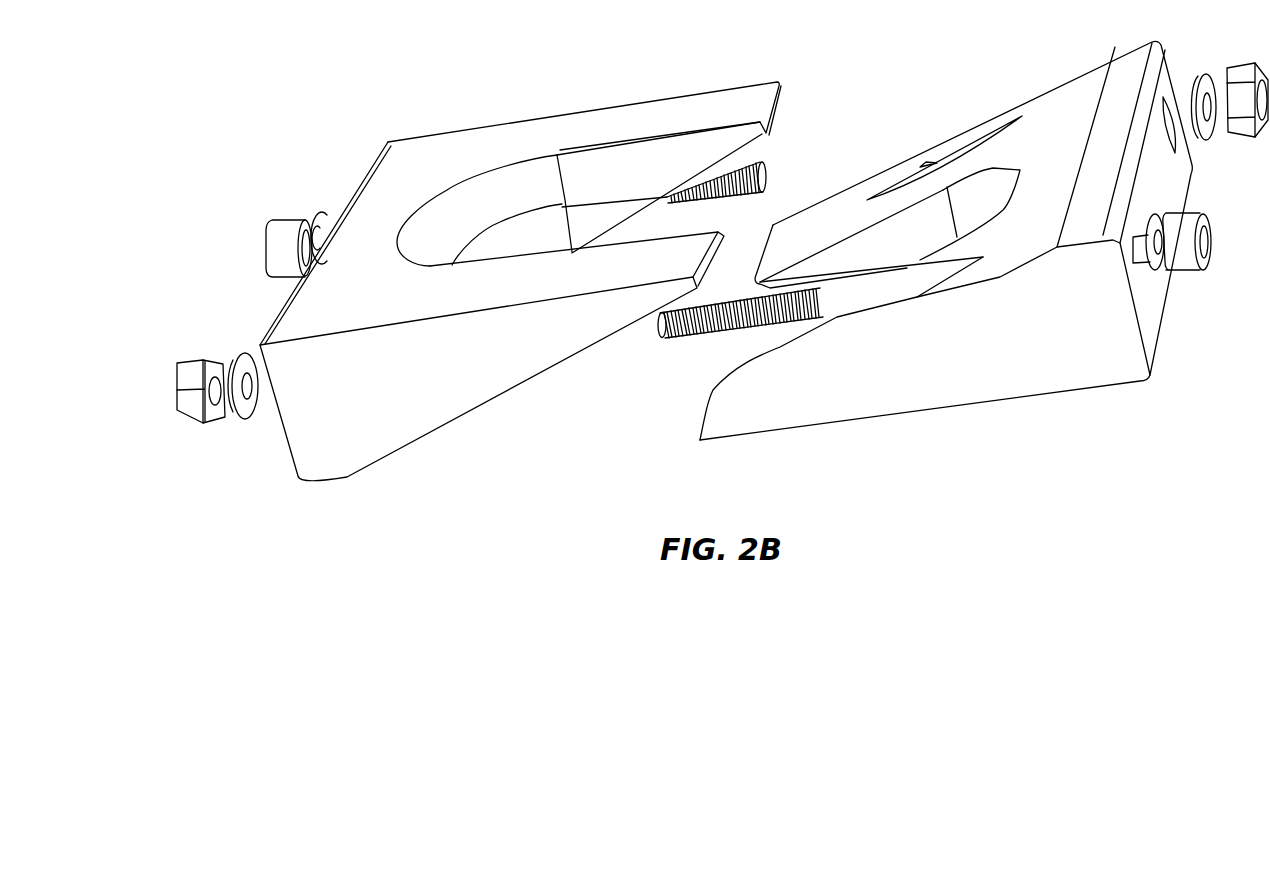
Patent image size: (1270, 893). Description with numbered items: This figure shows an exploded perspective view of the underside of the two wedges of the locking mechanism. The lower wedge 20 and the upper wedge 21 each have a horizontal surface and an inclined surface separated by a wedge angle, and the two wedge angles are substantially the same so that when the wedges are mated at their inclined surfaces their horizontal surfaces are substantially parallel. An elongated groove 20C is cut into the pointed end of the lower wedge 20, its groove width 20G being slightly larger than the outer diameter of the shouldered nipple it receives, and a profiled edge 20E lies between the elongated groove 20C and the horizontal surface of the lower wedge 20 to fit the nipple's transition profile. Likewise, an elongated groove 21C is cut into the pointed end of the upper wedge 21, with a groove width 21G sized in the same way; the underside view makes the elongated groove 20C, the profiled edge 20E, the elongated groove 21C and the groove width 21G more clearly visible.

The lower wedge 20 is at (470, 397).
The groove width 20G is at (483, 200).
The elongated groove 20C is at (520, 240).
The profiled edge 20E is at (618, 167).
The upper wedge 21 is at (1017, 387).
The groove width 21G is at (812, 280).
The elongated groove 21C is at (995, 180).